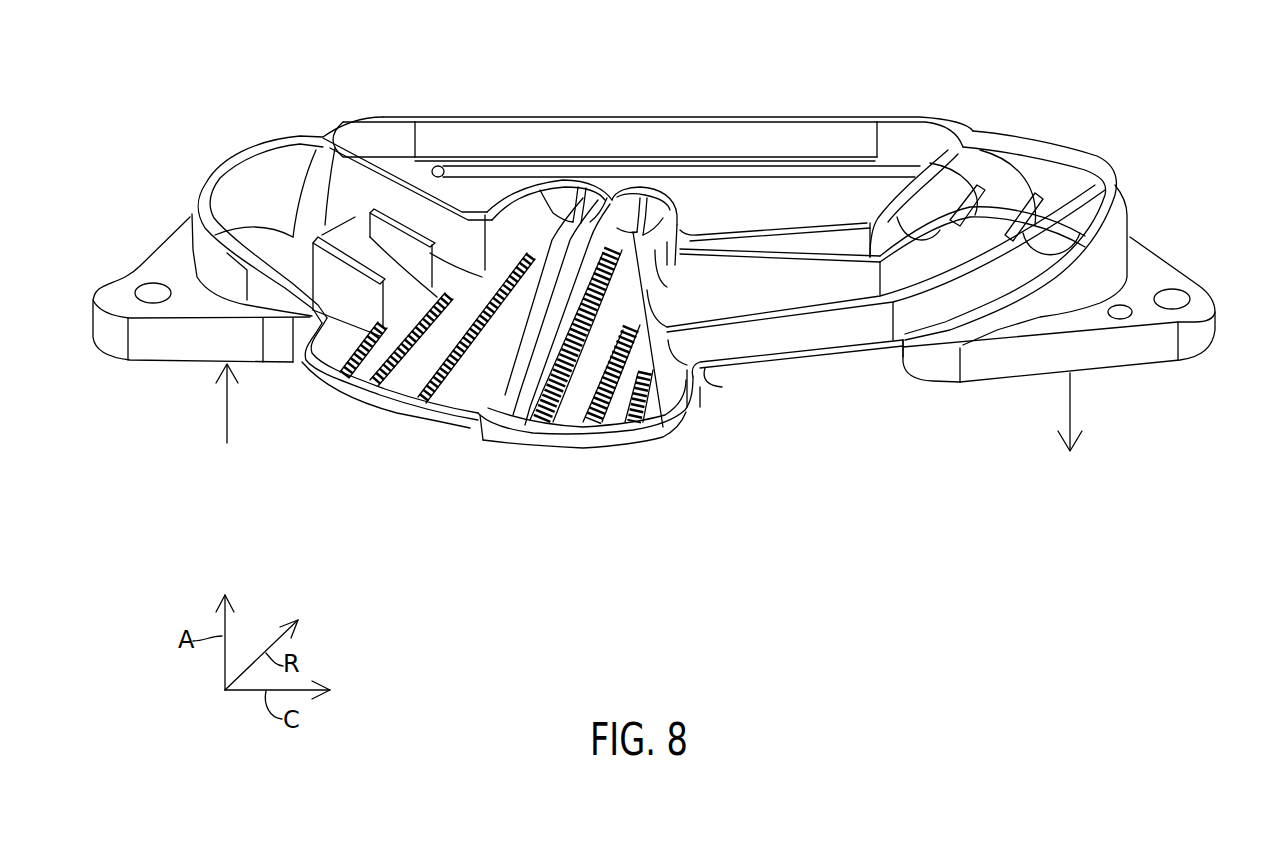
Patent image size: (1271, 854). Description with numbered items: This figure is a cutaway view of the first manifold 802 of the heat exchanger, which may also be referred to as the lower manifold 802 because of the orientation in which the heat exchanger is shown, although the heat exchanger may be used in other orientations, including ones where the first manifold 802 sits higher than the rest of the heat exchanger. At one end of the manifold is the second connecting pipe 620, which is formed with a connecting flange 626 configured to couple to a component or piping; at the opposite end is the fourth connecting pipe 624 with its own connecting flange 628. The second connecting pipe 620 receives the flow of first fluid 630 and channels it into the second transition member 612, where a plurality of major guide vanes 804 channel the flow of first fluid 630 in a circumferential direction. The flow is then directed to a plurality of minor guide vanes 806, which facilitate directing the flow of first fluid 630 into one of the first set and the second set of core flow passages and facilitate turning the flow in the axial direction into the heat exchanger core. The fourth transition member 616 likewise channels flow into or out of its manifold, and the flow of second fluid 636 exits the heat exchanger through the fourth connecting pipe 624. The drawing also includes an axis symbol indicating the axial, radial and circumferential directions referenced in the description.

The second transition member 612 is at (408, 422).
The fourth transition member 616 is at (667, 433).
The second connecting pipe 620 is at (247, 187).
The fourth connecting pipe 624 is at (1065, 175).
The connecting flange 626 is at (153, 348).
The connecting flange 628 is at (1140, 350).
The flow of first fluid 630 is at (229, 420).
The flow of second fluid 636 is at (1068, 403).
The first manifold 802 is at (577, 448).
The major guide vanes 804 is at (375, 280).
The minor guide vanes 806 is at (373, 332).